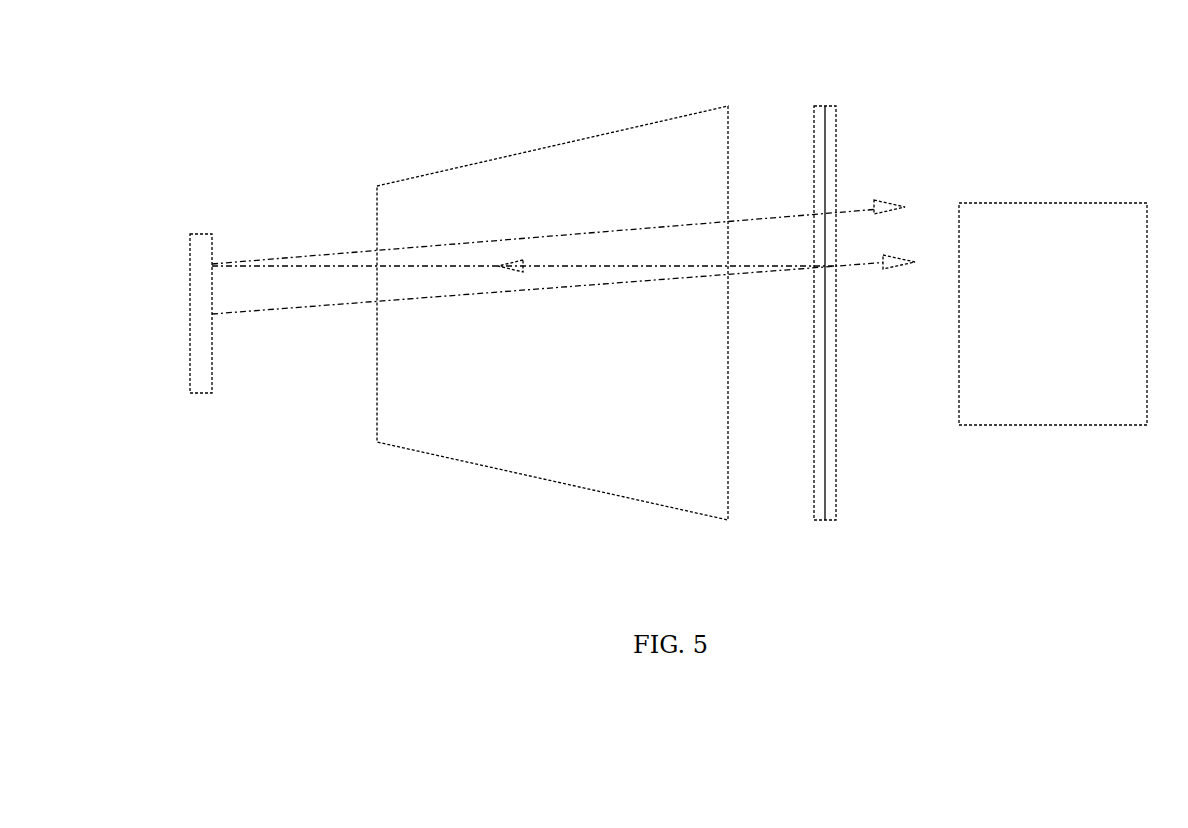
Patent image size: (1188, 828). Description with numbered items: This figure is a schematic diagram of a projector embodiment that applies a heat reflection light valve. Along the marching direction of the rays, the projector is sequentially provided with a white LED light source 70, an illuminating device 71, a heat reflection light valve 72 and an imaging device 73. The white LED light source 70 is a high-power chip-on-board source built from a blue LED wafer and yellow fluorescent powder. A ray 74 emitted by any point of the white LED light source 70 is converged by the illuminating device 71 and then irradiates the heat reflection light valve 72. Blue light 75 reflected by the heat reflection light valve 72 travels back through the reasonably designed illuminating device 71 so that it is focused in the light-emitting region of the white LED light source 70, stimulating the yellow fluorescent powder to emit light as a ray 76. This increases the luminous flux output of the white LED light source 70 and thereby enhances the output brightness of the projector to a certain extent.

The white LED light source 70 is at (199, 389).
The illuminating device 71 is at (423, 442).
The heat reflection light valve 72 is at (820, 520).
The imaging device 73 is at (1018, 422).
The ray 74 is at (297, 307).
The blue light 75 is at (323, 266).
The ray 76 is at (360, 253).